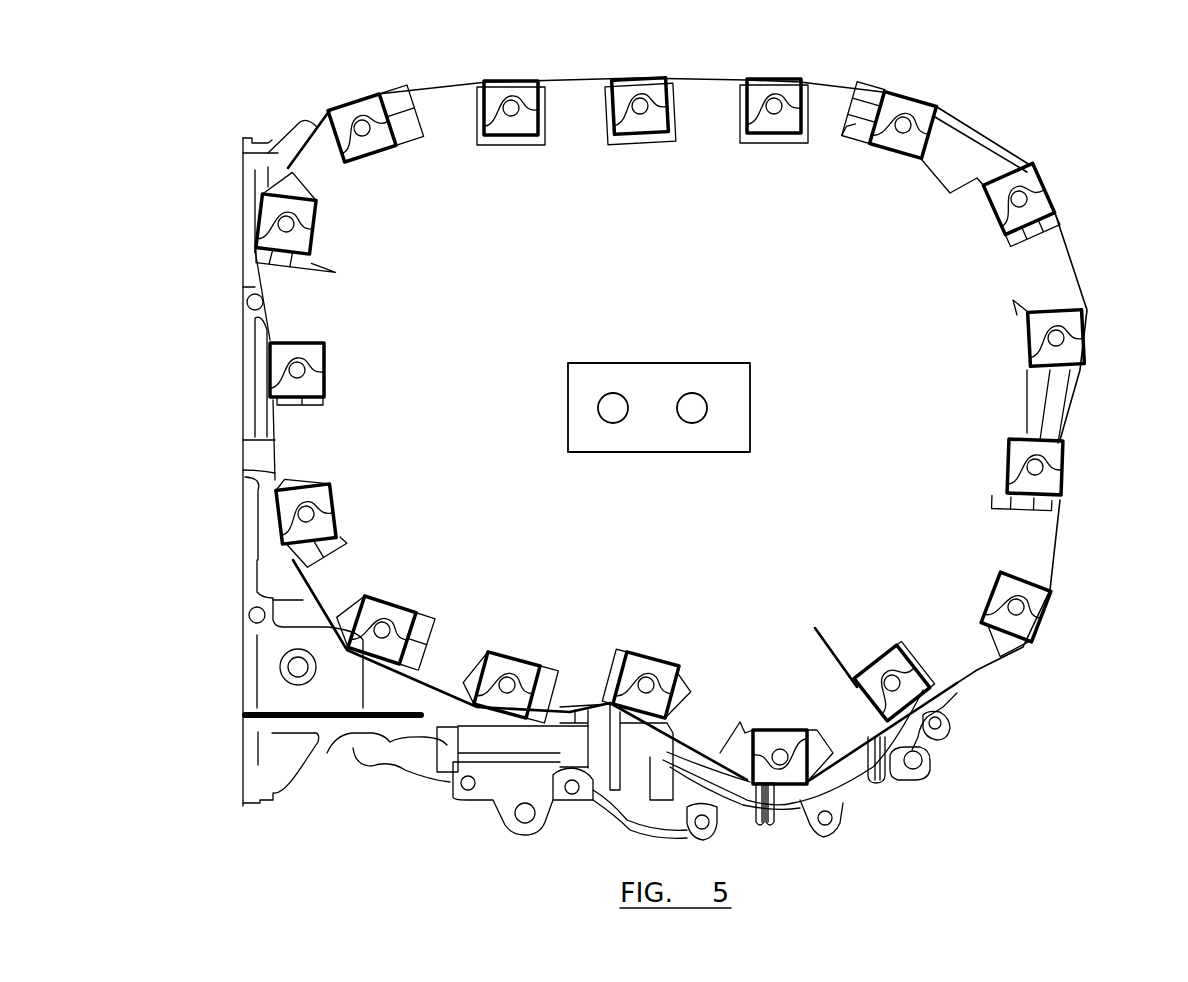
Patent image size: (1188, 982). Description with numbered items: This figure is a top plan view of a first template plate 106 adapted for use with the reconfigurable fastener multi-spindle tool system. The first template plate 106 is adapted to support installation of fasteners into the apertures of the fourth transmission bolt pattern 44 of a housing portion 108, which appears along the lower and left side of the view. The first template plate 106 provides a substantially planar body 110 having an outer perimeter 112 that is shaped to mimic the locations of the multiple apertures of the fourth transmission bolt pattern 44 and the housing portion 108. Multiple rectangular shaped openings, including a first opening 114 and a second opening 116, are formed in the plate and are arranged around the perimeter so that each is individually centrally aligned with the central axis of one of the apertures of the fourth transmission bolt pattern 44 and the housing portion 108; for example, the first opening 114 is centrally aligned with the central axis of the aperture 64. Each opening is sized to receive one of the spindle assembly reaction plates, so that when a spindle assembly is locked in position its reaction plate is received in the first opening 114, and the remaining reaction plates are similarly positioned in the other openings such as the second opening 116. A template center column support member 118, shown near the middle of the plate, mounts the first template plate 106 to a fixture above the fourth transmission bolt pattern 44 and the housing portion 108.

The fourth transmission bolt pattern 44 is at (488, 110).
The aperture 64 is at (508, 106).
The first opening 114 is at (545, 108).
The second opening 116 is at (643, 76).
The outer perimeter 112 is at (705, 76).
The first template plate 106 is at (1096, 161).
The substantially planar body 110 is at (1076, 270).
The template center column support member 118 is at (690, 443).
The housing portion 108 is at (747, 833).